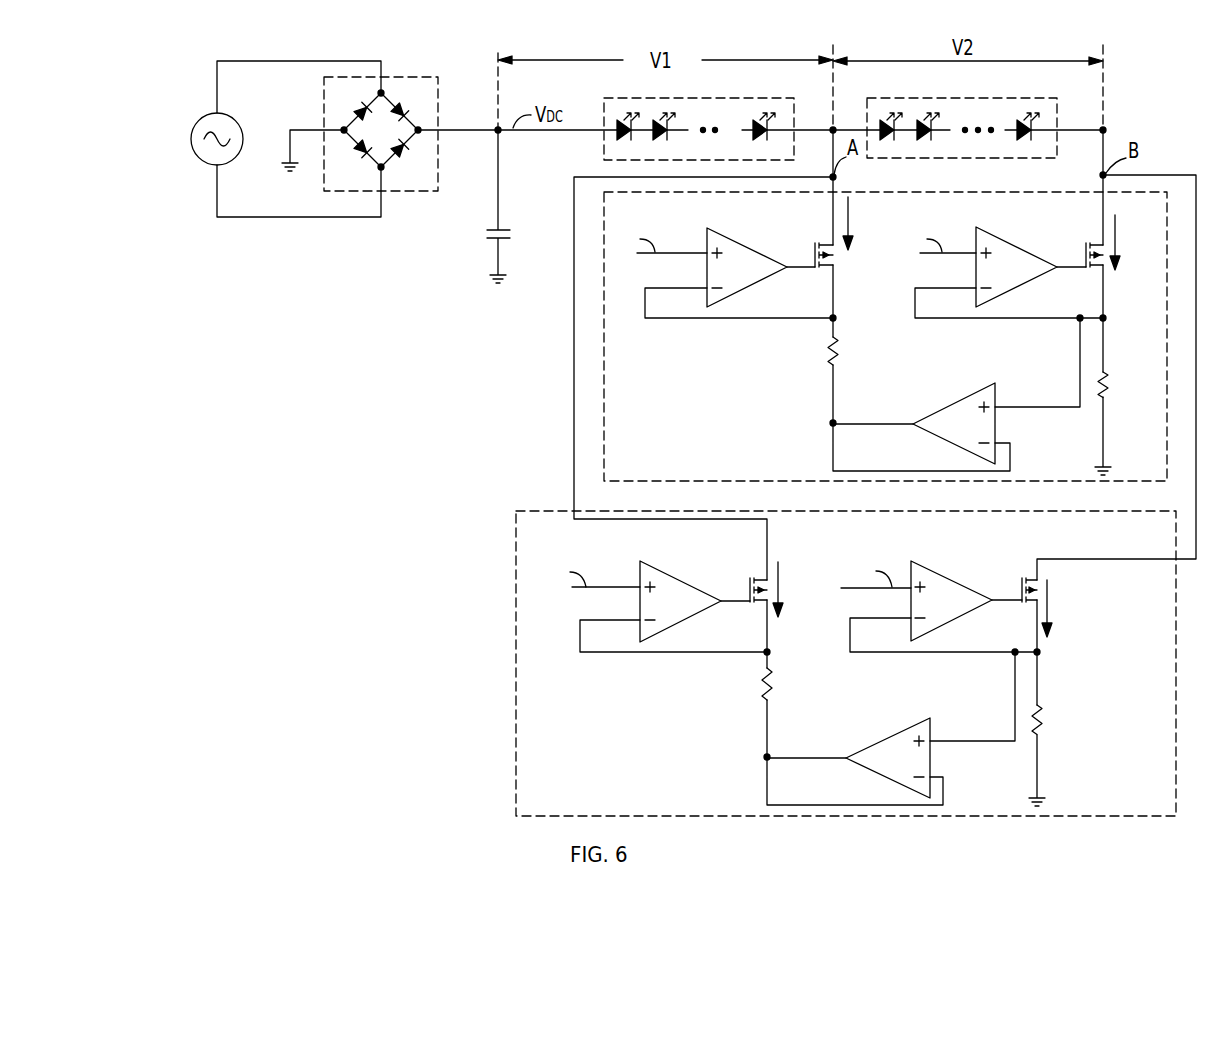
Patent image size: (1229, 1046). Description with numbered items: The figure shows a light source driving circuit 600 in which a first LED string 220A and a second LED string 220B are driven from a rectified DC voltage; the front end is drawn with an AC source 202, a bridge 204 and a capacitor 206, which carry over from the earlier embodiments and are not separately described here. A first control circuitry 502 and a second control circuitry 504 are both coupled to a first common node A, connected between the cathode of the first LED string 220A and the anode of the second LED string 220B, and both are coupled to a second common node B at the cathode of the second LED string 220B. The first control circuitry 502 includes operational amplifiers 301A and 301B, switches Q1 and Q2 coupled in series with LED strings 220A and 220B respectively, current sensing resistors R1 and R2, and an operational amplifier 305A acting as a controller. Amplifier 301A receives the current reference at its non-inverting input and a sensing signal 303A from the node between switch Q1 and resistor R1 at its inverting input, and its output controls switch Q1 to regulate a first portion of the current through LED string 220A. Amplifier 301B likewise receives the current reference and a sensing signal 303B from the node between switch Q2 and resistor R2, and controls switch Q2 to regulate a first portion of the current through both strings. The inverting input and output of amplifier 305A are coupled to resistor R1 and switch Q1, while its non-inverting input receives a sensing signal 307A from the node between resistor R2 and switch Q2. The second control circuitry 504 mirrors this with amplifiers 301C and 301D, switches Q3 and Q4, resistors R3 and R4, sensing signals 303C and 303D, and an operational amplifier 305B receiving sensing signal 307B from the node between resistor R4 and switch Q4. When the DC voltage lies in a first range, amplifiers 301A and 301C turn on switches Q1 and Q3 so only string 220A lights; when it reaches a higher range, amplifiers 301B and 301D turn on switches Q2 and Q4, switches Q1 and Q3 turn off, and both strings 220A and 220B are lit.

The AC voltage source 202 is at (198, 114).
The bridge rectifier 204 is at (398, 76).
The capacitor 206 is at (503, 227).
The first LED string 220A is at (712, 98).
The second LED string 220B is at (975, 98).
The operational amplifier 301A is at (722, 228).
The operational amplifier 301B is at (992, 228).
The operational amplifier 301C is at (657, 562).
The operational amplifier 301D is at (928, 562).
The sensing signal 303A is at (757, 318).
The sensing signal 303B is at (1018, 318).
The sensing signal 303C is at (691, 652).
The sensing signal 303D is at (951, 652).
The operational amplifier 305A is at (968, 396).
The operational amplifier 305B is at (903, 730).
The sensing signal 307A is at (1057, 406).
The sensing signal 307B is at (992, 740).
The first control circuitry 502 is at (916, 190).
The second control circuitry 504 is at (909, 510).
The light source driving circuit 600 is at (276, 354).
The first switch Q1 is at (823, 241).
The third switch Q2 is at (1092, 241).
The second switch Q3 is at (757, 576).
The fourth switch Q4 is at (1029, 577).
The current sensing resistor R1 is at (839, 352).
The current sensing resistor R2 is at (1109, 391).
The current sensing resistor R3 is at (774, 688).
The current sensing resistor R4 is at (1044, 725).